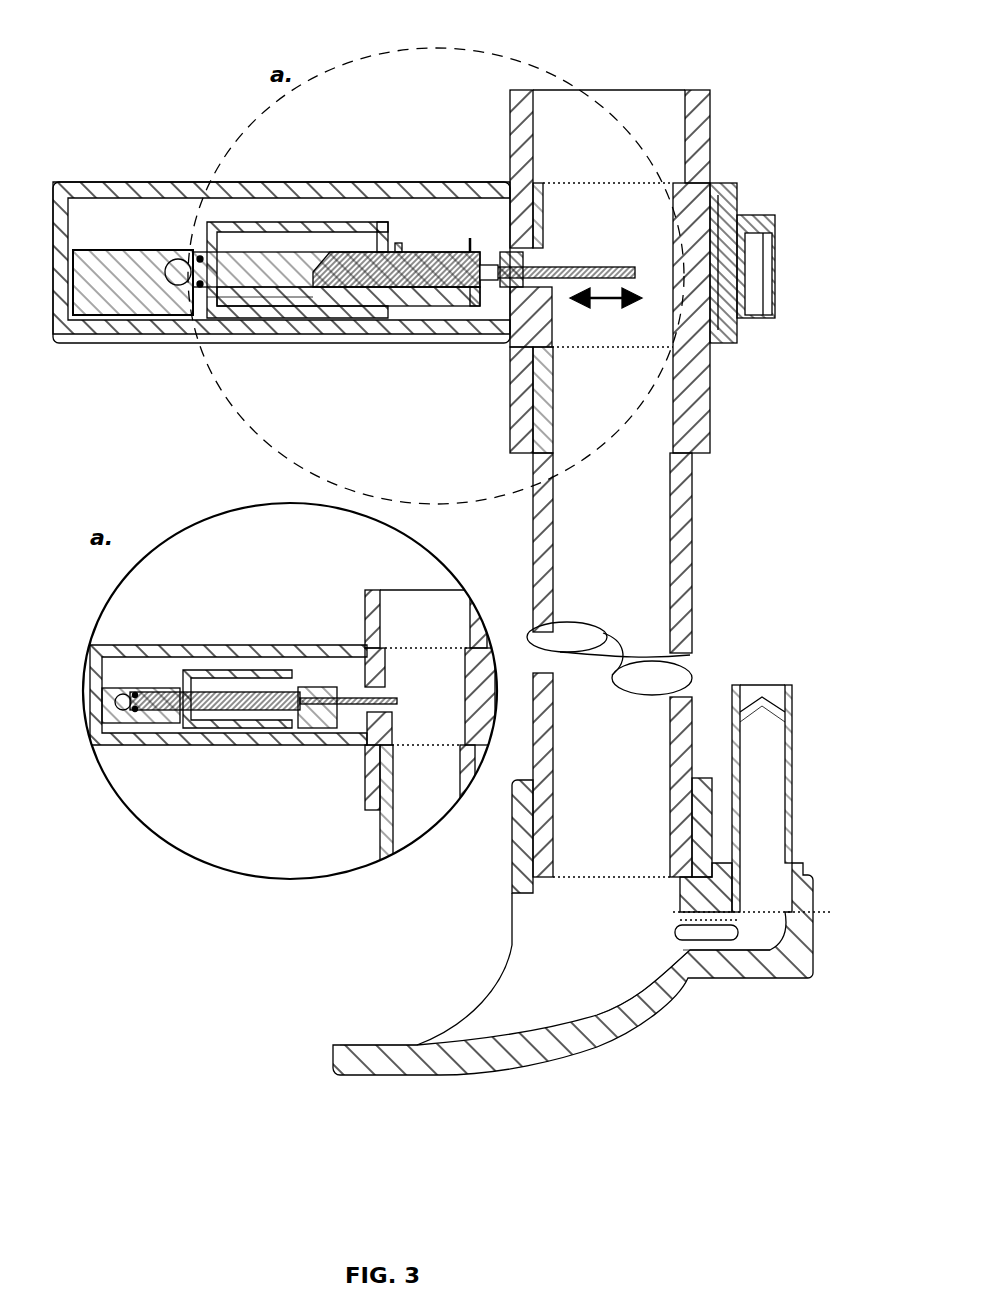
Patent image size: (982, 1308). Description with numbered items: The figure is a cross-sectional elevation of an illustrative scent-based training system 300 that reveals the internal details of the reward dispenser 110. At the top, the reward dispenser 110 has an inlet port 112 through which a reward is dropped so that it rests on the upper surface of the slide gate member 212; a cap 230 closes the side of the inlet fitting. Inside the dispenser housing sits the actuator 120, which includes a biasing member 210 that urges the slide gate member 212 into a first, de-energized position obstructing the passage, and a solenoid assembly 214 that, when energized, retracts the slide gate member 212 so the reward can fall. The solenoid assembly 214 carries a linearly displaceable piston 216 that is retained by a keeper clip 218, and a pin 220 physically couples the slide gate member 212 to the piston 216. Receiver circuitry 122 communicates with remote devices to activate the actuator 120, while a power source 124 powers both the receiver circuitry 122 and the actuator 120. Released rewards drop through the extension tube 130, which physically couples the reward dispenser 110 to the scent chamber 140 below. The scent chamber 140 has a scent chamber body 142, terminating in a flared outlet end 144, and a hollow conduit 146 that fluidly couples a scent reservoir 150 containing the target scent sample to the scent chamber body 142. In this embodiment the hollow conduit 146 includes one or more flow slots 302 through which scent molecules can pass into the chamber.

The scent-based training system 300 is at (795, 32).
The reward dispenser 110 is at (115, 171).
The inlet port 112 is at (710, 133).
The slide gate member 212 is at (607, 263).
The cap 230 is at (757, 288).
The extension tube 130 is at (691, 548).
The receiver circuitry 122 is at (153, 300).
The linearly displaceable piston 216 is at (362, 300).
The actuator 120 is at (322, 212).
The power source 124 is at (410, 308).
The solenoid assembly 214 is at (280, 297).
The biasing member 210 is at (413, 250).
The collar 218 is at (463, 318).
The pin 220 is at (503, 318).
The scent reservoir 150 is at (765, 757).
The scent chamber 140 is at (540, 1076).
The flange end 144 is at (372, 1076).
The scent chamber body 142 is at (650, 1033).
The flow slots 302 is at (745, 925).
The hollow conduit 146 is at (768, 931).